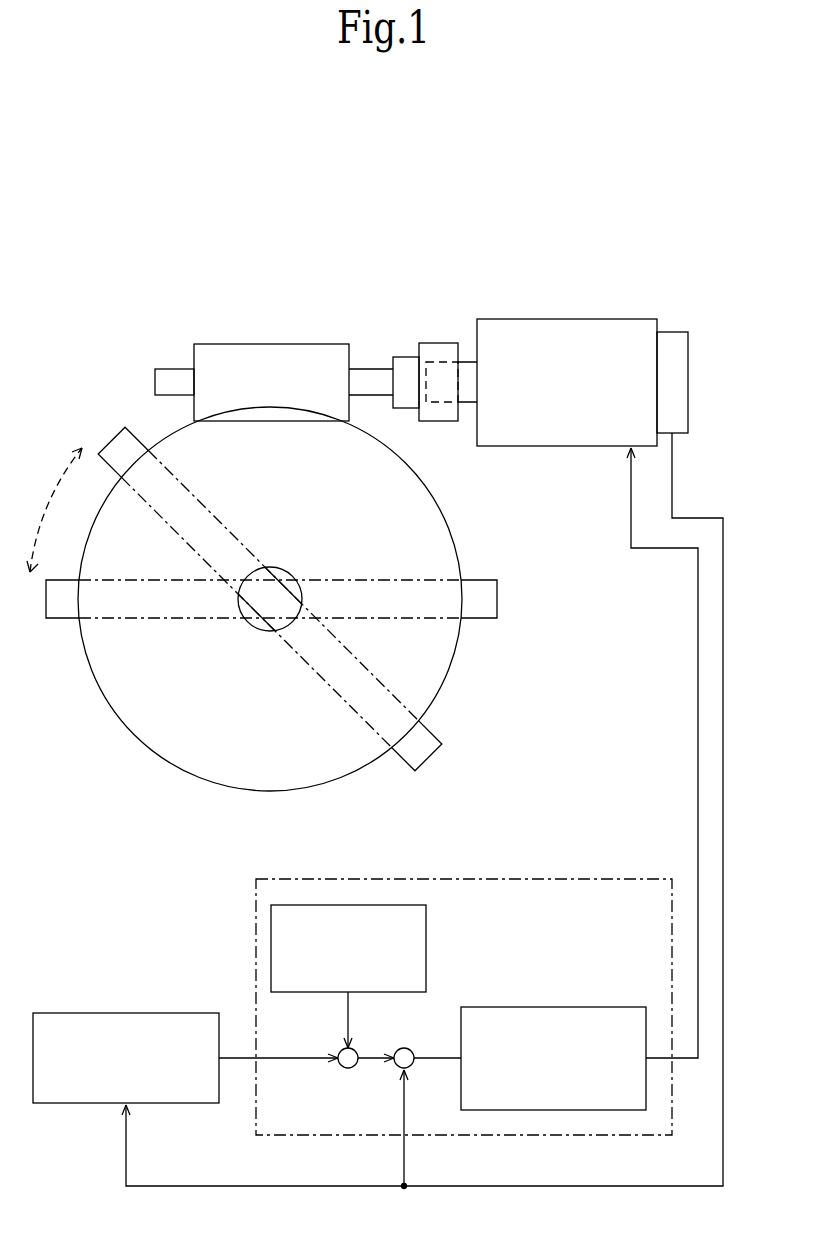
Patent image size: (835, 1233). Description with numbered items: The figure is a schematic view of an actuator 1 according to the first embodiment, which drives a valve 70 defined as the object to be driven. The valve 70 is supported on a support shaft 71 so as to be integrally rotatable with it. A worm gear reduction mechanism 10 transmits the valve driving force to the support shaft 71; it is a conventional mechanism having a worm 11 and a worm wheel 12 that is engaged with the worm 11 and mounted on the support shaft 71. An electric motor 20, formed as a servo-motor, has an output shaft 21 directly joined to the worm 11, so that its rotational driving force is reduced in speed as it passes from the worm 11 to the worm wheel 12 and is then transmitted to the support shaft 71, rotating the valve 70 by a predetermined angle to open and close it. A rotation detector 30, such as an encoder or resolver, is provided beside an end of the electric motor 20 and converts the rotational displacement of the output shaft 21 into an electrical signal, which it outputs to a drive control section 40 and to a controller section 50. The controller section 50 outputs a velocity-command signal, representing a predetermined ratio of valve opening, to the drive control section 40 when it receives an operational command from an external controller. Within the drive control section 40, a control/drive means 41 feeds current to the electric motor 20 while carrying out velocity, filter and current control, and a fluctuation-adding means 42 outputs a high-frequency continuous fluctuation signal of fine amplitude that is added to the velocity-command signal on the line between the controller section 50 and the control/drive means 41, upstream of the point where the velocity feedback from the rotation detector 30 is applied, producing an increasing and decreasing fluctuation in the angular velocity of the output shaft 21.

The actuator 1 is at (626, 249).
The worm gear reduction mechanism 10 is at (225, 253).
The worm 11 is at (235, 346).
The worm wheel 12 is at (163, 440).
The electric motor 20 is at (533, 318).
The output shaft 21 is at (467, 362).
The rotation detector 30 is at (677, 332).
The drive control section 40 is at (255, 898).
The control/drive means 41 is at (553, 1006).
The fluctuation-adding means 42 is at (270, 950).
The controller section 50 is at (80, 1012).
The valve 70 is at (45, 600).
The support shaft 71 is at (257, 630).